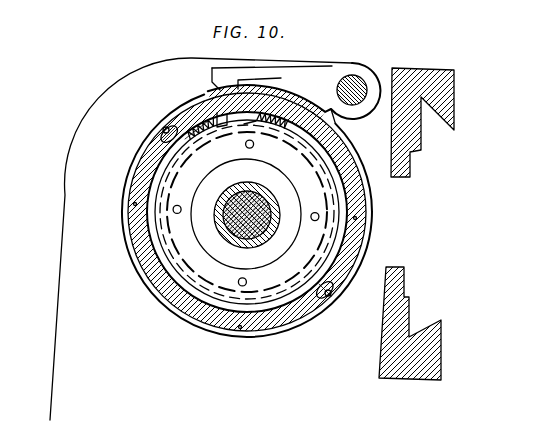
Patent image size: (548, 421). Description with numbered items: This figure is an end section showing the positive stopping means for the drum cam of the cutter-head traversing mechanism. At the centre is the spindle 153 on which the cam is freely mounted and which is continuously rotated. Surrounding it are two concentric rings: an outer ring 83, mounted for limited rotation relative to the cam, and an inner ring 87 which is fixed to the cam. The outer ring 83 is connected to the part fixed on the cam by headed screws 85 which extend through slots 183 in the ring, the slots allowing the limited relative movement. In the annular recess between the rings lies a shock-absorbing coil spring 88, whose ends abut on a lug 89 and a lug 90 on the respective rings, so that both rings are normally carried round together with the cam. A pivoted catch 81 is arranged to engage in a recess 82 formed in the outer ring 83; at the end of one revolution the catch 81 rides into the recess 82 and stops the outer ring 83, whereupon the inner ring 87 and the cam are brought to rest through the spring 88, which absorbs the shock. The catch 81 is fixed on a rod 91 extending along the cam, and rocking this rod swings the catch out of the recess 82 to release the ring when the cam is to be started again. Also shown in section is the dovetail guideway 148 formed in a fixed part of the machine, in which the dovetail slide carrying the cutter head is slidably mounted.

The pivoted catch 81 is at (324, 82).
The recess 82 is at (197, 98).
The ring 83 is at (127, 183).
The headed screws 85 is at (166, 128).
The inner ring 87 is at (125, 205).
The coil spring 88 is at (170, 132).
The lug 89 is at (217, 117).
The lug 90 is at (244, 120).
The rod 91 is at (362, 92).
The dovetail guideway 148 is at (434, 84).
The spindle 153 is at (227, 220).
The slots 183 is at (157, 140).